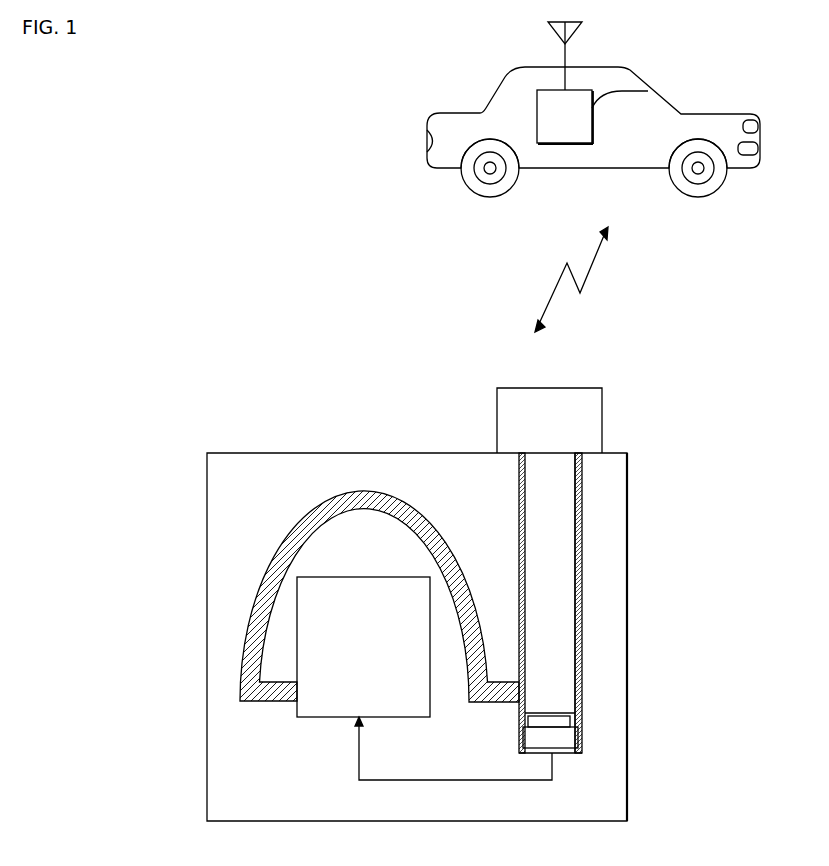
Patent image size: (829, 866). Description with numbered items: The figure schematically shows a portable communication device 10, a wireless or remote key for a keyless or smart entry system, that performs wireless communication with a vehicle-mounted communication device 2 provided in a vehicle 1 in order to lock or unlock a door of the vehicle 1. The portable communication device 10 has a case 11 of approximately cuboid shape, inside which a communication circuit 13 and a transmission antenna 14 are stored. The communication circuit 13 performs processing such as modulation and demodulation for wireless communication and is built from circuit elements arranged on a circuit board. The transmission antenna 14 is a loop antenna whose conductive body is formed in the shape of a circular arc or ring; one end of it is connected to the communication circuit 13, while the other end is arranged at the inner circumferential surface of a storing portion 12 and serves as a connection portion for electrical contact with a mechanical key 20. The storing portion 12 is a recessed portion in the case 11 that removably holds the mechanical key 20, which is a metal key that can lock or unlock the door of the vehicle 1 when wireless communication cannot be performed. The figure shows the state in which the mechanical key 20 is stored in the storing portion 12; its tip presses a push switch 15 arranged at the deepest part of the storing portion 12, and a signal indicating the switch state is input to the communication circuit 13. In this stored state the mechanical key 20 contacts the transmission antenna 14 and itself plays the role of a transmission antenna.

The vehicle 1 is at (708, 113).
The vehicle-mounted communication device 2 is at (648, 91).
The portable communication device 10 is at (247, 433).
The case 11 is at (207, 530).
The storing portion 12 is at (572, 500).
The communication circuit 13 is at (352, 577).
The transmission antenna 14 is at (297, 518).
The push switch 15 is at (582, 738).
The mechanical key 20 is at (567, 571).